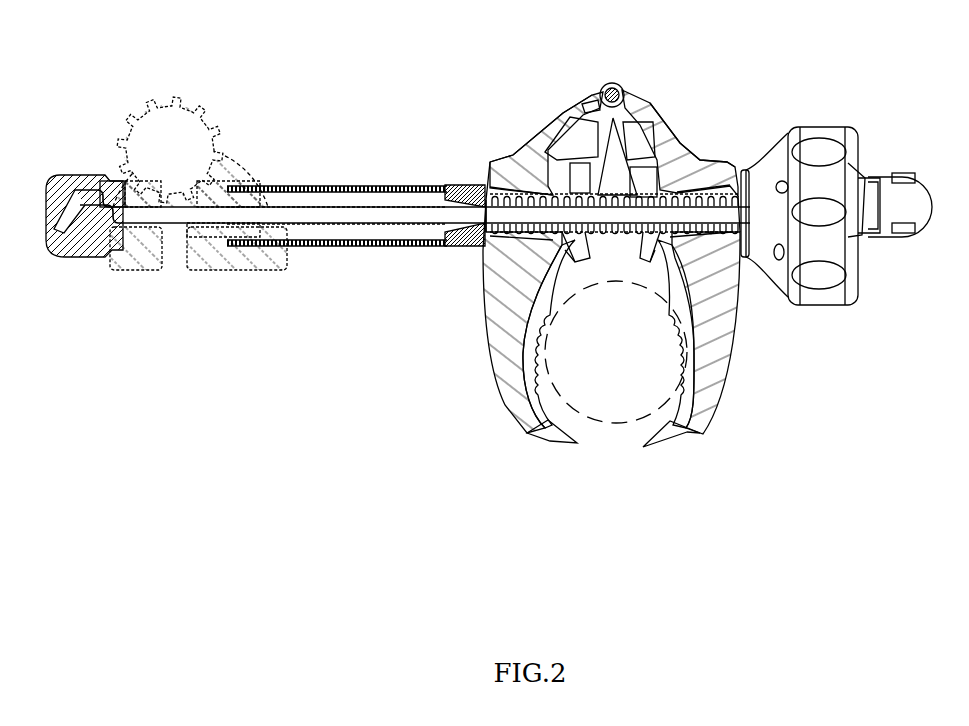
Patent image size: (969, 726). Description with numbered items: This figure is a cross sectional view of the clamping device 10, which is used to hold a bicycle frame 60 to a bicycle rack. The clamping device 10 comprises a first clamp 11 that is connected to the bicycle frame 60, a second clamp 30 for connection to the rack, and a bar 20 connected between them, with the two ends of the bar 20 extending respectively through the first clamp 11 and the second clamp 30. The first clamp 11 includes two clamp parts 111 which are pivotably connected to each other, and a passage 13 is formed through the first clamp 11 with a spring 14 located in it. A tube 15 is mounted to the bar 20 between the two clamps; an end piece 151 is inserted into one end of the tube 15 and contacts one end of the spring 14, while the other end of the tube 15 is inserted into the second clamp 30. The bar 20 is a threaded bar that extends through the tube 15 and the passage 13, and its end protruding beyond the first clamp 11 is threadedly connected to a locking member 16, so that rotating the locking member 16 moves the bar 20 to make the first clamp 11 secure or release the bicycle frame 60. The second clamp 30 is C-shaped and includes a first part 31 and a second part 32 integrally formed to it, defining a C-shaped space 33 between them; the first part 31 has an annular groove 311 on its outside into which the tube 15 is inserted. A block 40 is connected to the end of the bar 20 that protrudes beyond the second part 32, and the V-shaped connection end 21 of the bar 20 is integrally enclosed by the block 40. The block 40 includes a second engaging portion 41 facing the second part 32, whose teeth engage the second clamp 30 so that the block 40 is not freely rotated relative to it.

The clamping device 10 is at (448, 412).
The first clamp 11 is at (697, 438).
The clamp parts 111 is at (507, 402).
The passage 13 is at (487, 193).
The spring 14 is at (678, 197).
The tube 15 is at (382, 187).
The end piece 151 is at (453, 185).
The locking member 16 is at (820, 282).
The bar 20 is at (375, 225).
The connection end 21 is at (73, 205).
The second clamp 30 is at (214, 90).
The first part 31 is at (220, 260).
The annular groove 311 is at (240, 194).
The second part 32 is at (140, 258).
The C-shaped space 33 is at (175, 115).
The block 40 is at (73, 243).
The second engaging portion 41 is at (113, 187).
The bicycle frame 60 is at (607, 423).